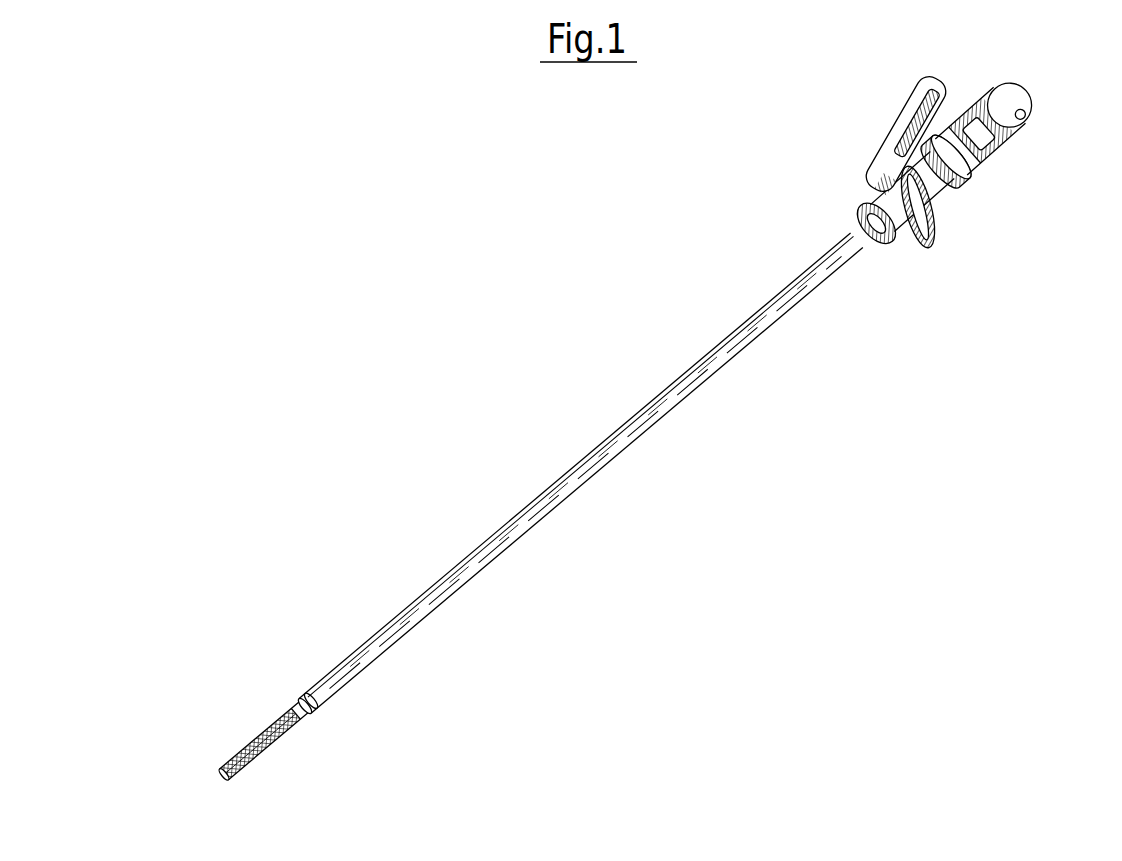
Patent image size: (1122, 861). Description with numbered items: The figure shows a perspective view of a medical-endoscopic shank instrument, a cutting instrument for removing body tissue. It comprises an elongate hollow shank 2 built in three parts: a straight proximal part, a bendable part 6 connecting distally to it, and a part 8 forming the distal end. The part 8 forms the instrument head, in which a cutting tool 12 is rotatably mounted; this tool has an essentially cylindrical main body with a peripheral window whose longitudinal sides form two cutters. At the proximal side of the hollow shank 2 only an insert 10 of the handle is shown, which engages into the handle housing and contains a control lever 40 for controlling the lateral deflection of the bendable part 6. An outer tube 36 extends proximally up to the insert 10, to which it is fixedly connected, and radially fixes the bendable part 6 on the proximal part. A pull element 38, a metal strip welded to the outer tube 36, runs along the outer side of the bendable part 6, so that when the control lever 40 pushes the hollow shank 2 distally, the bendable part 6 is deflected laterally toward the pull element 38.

The hollow shank 2 is at (278, 769).
The bendable part 6 is at (282, 712).
The distal end part 8 is at (220, 773).
The insert 10 is at (937, 175).
The cutting tool 12 is at (227, 757).
The outer tube 36 is at (623, 449).
The pull element 38 is at (307, 703).
The control lever 40 is at (900, 133).